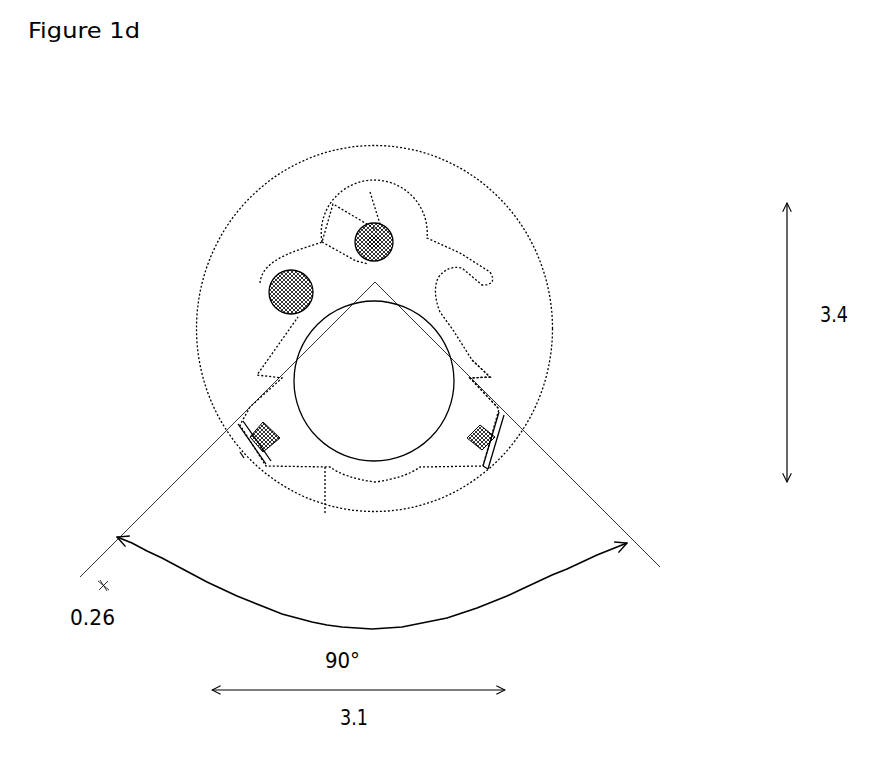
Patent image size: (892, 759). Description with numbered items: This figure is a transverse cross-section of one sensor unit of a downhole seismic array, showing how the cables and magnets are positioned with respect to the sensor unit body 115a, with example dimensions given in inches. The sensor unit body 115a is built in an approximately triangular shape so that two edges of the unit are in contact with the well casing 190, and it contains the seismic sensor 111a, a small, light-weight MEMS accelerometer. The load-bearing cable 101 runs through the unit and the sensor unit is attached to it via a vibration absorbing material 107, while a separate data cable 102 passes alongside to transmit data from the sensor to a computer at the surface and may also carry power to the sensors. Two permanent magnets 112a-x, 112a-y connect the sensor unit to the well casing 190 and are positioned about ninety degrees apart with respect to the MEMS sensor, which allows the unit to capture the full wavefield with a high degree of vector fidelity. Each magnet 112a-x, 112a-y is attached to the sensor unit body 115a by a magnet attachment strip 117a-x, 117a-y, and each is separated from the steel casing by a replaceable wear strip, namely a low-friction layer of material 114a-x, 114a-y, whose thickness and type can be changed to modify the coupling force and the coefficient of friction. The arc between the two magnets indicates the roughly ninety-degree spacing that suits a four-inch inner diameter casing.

The well casing 190 is at (219, 222).
The load-bearing cable 101 is at (378, 228).
The vibration absorbing material 107 is at (398, 240).
The data cable 102 is at (272, 308).
The seismic sensor 111a is at (423, 342).
The sensor unit body 115a is at (493, 396).
The magnet 112a-x is at (325, 512).
The magnet 112a-y is at (489, 442).
The low-friction layer of material 114a-x is at (238, 453).
The low-friction layer of material 114a-y is at (489, 465).
The magnet attachment strip 117a-x is at (325, 467).
The magnet attachment strip 117a-y is at (477, 430).